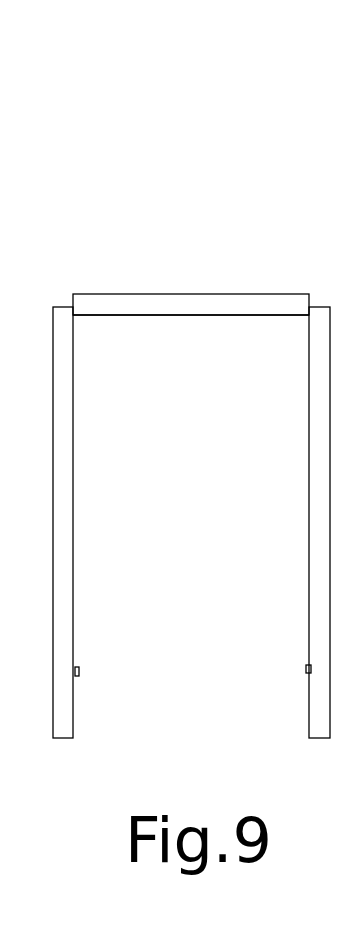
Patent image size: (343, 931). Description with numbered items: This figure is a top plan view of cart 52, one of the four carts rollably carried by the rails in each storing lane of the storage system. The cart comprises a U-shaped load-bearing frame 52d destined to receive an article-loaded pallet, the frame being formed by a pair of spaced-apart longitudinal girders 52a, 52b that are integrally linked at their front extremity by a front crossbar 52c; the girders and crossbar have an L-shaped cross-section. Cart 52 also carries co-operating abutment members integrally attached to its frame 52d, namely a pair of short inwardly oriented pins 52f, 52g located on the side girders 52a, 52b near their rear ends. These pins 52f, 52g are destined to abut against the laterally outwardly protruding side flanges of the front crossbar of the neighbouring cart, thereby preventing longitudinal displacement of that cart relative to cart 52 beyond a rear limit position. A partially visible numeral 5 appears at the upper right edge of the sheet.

The cart 52 is at (191, 404).
The longitudinal girder 52a is at (62, 493).
The longitudinal girder 52b is at (322, 557).
The front crossbar 52c is at (110, 307).
The U-shaped load-bearing frame 52d is at (190, 293).
The pin 52f is at (79, 671).
The pin 52g is at (307, 669).
The partially shown reference 5 is at (332, 266).